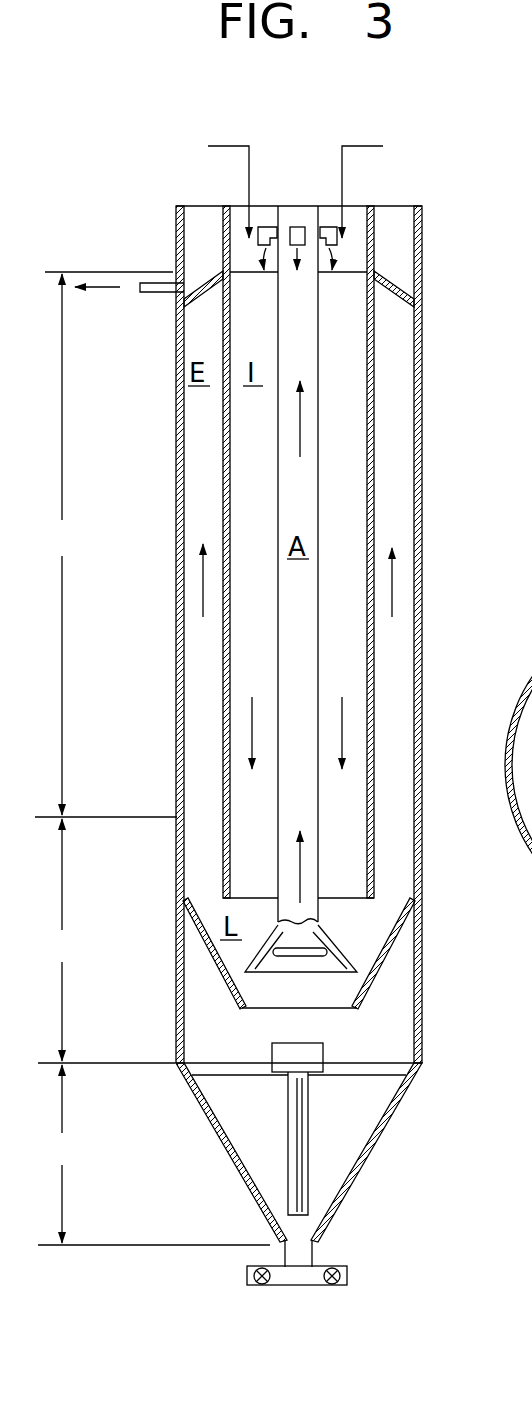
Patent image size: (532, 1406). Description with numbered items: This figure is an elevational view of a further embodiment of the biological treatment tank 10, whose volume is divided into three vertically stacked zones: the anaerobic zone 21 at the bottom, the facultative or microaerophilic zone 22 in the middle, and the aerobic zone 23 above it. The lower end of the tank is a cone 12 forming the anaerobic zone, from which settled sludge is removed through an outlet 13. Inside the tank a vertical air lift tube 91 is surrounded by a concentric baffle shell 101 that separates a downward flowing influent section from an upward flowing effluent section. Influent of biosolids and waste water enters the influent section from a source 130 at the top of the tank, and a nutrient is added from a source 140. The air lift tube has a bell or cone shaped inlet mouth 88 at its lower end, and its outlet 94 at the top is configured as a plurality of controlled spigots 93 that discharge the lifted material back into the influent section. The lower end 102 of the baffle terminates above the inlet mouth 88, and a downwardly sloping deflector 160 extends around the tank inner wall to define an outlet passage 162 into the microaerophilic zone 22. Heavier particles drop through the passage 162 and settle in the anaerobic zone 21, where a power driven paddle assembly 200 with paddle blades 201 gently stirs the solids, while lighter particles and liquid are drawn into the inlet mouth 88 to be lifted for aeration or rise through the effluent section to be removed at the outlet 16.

The tank 10 is at (422, 330).
The cone 12 is at (343, 1207).
The outlet 13 is at (307, 1278).
The outlet 16 is at (153, 292).
The anaerobic zone 21 is at (154, 1154).
The facultative zone 22 is at (106, 939).
The aerobic zone 23 is at (107, 543).
The inlet mouth 88 is at (323, 963).
The air lift tube 91 is at (303, 632).
The controlled spigots 93 is at (300, 227).
The outlet 94 is at (312, 943).
The baffle shell 101 is at (367, 497).
The lower end of the baffle 102 is at (213, 907).
The source 130 is at (229, 147).
The source 140 is at (370, 147).
The deflector 160 is at (387, 958).
The outlet passage 162 is at (238, 978).
The paddle assembly 200 is at (307, 1056).
The paddle blades 201 is at (248, 1137).